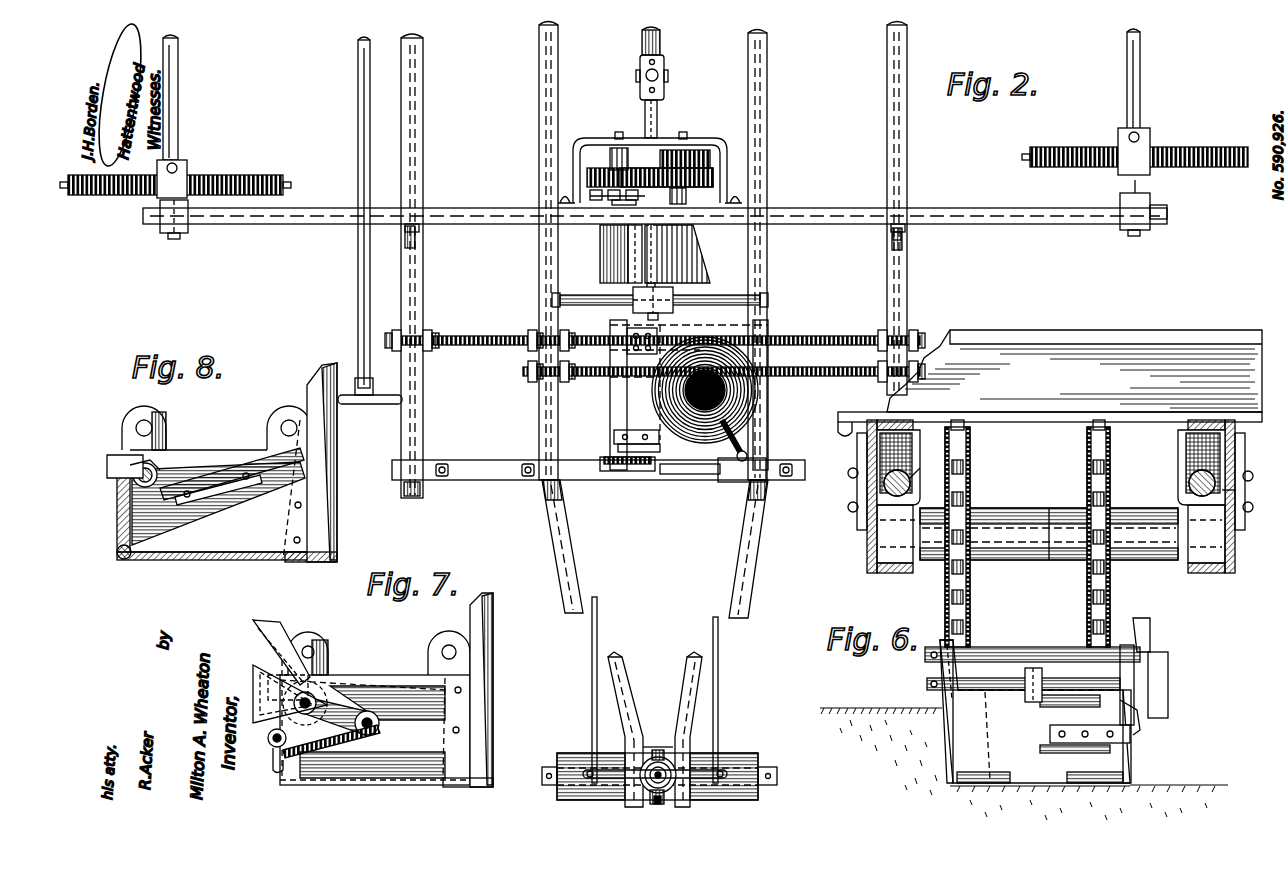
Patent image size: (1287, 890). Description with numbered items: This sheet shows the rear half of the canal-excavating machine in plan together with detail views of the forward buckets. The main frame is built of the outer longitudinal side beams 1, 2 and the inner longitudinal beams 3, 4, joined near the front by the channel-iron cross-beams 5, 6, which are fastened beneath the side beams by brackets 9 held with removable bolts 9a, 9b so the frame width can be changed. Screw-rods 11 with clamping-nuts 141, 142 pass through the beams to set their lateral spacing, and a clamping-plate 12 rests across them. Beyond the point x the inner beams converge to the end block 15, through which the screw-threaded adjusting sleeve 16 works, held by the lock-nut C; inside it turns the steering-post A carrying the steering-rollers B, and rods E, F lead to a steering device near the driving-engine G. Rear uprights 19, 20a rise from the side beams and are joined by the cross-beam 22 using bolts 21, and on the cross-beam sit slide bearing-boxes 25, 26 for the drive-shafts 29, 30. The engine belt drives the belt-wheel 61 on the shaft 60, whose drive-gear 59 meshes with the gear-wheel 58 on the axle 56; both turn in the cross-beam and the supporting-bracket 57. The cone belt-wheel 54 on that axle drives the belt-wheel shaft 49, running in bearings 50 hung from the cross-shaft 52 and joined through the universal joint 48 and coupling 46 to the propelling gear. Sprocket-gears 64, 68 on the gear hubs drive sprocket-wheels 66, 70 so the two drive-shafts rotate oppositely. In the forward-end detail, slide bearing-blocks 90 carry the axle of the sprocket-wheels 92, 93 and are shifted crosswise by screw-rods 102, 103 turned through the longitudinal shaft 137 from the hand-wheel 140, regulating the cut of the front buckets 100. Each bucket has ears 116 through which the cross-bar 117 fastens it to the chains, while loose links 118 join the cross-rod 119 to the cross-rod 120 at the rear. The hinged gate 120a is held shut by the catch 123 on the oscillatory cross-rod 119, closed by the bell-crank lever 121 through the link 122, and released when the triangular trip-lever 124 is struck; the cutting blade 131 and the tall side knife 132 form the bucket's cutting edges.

In FIG. 2, the outer longitudinal side beam 1 is at (403, 428).
In FIG. 2, the outer longitudinal side beam 2 is at (907, 283).
In FIG. 6, the outer longitudinal side beam 2 is at (1074, 371).
In FIG. 2, the inner longitudinal beam 3 is at (541, 108).
In FIG. 2, the inner longitudinal beam 4 is at (767, 128).
In FIG. 6, the channel-iron cross-beam 5 is at (868, 548).
In FIG. 6, the channel-iron cross-beam 6 is at (1205, 573).
In FIG. 6, the bracket 9 is at (858, 445).
In FIG. 6, the removable bolt 9a is at (850, 507).
In FIG. 6, the removable bolt 9b is at (848, 424).
In FIG. 2, the screw-rod 11 is at (466, 335).
In FIG. 2, the clamping-plate 12 is at (598, 462).
In FIG. 2, the end block 15 is at (645, 746).
In FIG. 2, the adjusting sleeve 16 is at (695, 800).
In FIG. 2, the rear upright 19 is at (418, 238).
In FIG. 2, the rear upright 20a is at (905, 230).
In FIG. 2, the bolt 21 is at (406, 246).
In FIG. 2, the cross-beam 22 is at (323, 229).
In FIG. 2, the slide bearing-box 25 is at (163, 233).
In FIG. 2, the slide bearing-box 26 is at (1150, 226).
In FIG. 2, the drive-shaft 29 is at (180, 122).
In FIG. 2, the longitudinal drive-shaft 30 is at (1140, 85).
In FIG. 2, the coupling 46 is at (660, 46).
In FIG. 2, the universal joint 48 is at (664, 80).
In FIG. 2, the belt-wheel shaft 49 is at (658, 128).
In FIG. 2, the bearing 50 is at (673, 305).
In FIG. 2, the cross-shaft 52 is at (757, 292).
In FIG. 2, the belt-wheel 54 is at (708, 256).
In FIG. 2, the axle 56 is at (686, 133).
In FIG. 2, the supporting-bracket 57 is at (727, 150).
In FIG. 2, the gear-wheel 58 is at (713, 178).
In FIG. 2, the drive-gear 59 is at (588, 179).
In FIG. 2, the shaft 60 is at (617, 134).
In FIG. 2, the belt-wheel 61 is at (606, 250).
In FIG. 2, the sprocket-gear 64 is at (612, 205).
In FIG. 2, the sprocket-wheel 66 is at (262, 174).
In FIG. 2, the sprocket-gear 68 is at (712, 158).
In FIG. 2, the sprocket-wheel 70 is at (1092, 148).
In FIG. 6, the slide bearing-block 90 is at (910, 485).
In FIG. 6, the sprocket-wheel 92 is at (964, 474).
In FIG. 6, the sprocket-wheel 93 is at (1108, 470).
In FIG. 6, the front bucket 100 is at (1035, 711).
In FIG. 7, the front bucket 100 is at (375, 712).
In FIG. 6, the screw-rod 102 is at (910, 477).
In FIG. 6, the screw-rod 103 is at (1238, 488).
In FIG. 8, the projecting ear 116 is at (275, 410).
In FIG. 7, the projecting ear 116 is at (428, 652).
In FIG. 6, the cross-bar 117 is at (942, 651).
In FIG. 6, the loose link 118 is at (836, 712).
In FIG. 8, the loose link 118 is at (163, 425).
In FIG. 7, the loose link 118 is at (312, 640).
In FIG. 6, the oscillatory cross-rod 119 is at (943, 680).
In FIG. 8, the oscillatory cross-rod 119 is at (152, 468).
In FIG. 7, the oscillatory cross-rod 119 is at (318, 692).
In FIG. 6, the cross-rod 120 is at (1145, 655).
In FIG. 6, the hinged gate 120a is at (1100, 757).
In FIG. 8, the hinged gate 120a is at (197, 505).
In FIG. 7, the hinged gate 120a is at (274, 748).
In FIG. 6, the bell-crank lever 121 is at (1142, 622).
In FIG. 7, the bell-crank lever 121 is at (272, 622).
In FIG. 6, the link 122 is at (1133, 722).
In FIG. 7, the link 122 is at (318, 738).
In FIG. 6, the catch 123 is at (1025, 702).
In FIG. 8, the catch 123 is at (108, 458).
In FIG. 7, the catch 123 is at (268, 683).
In FIG. 6, the trip-lever 124 is at (1168, 672).
In FIG. 7, the trip-lever 124 is at (274, 694).
In FIG. 8, the cutting blade 131 is at (325, 560).
In FIG. 7, the cutting blade 131 is at (471, 795).
In FIG. 6, the cutting knife 132 is at (946, 740).
In FIG. 8, the cutting knife 132 is at (313, 378).
In FIG. 7, the cutting knife 132 is at (491, 634).
In FIG. 2, the longitudinal shaft 137 is at (358, 138).
In FIG. 2, the hand-wheel 140 is at (370, 401).
In FIG. 2, the clamping-nut 141 is at (392, 338).
In FIG. 2, the clamping-nut 142 is at (433, 330).
In FIG. 2, the steering-post A is at (672, 770).
In FIG. 2, the steering-roller B is at (570, 802).
In FIG. 2, the lock-nut C is at (652, 806).
In FIG. 2, the steering rod E is at (594, 672).
In FIG. 2, the steering rod F is at (720, 680).
In FIG. 2, the driving-engine G is at (689, 395).
In FIG. 2, the section line x is at (620, 290).
In FIG. 6, the section line x is at (1050, 640).